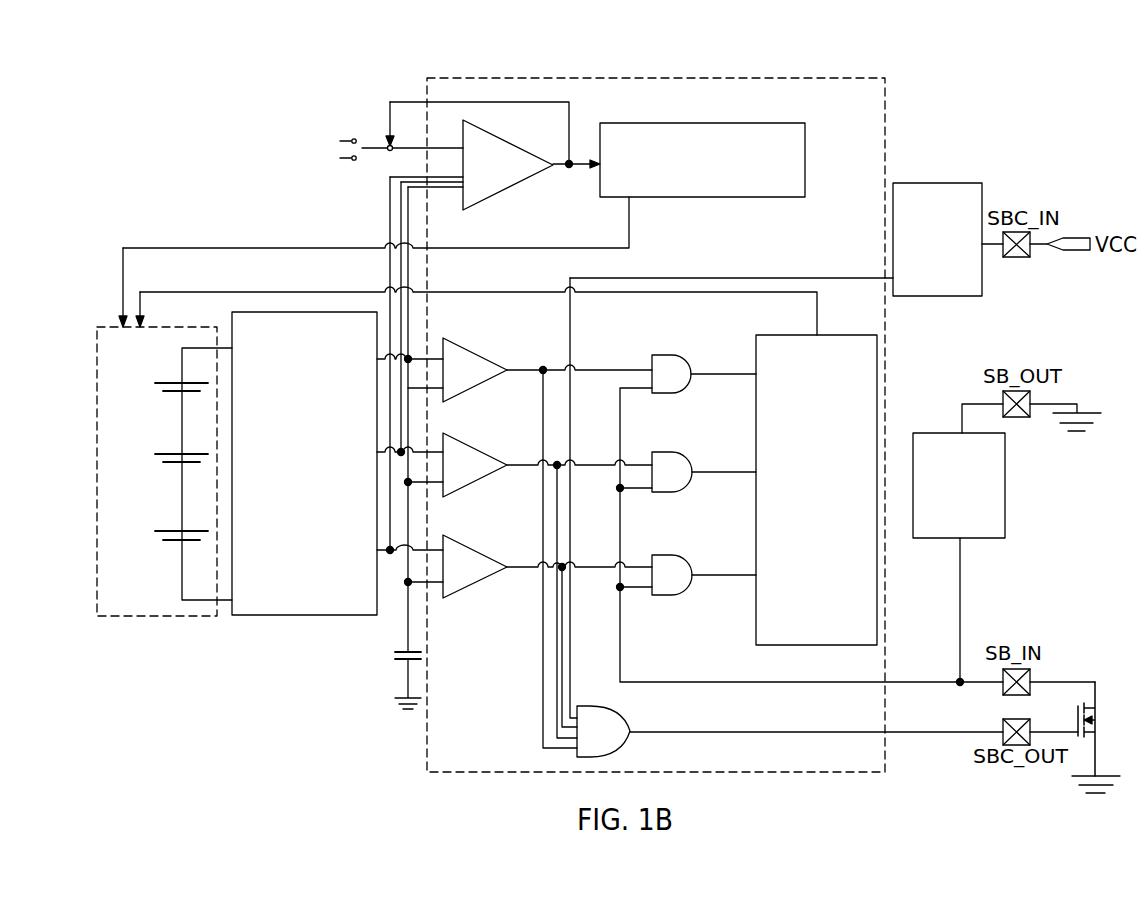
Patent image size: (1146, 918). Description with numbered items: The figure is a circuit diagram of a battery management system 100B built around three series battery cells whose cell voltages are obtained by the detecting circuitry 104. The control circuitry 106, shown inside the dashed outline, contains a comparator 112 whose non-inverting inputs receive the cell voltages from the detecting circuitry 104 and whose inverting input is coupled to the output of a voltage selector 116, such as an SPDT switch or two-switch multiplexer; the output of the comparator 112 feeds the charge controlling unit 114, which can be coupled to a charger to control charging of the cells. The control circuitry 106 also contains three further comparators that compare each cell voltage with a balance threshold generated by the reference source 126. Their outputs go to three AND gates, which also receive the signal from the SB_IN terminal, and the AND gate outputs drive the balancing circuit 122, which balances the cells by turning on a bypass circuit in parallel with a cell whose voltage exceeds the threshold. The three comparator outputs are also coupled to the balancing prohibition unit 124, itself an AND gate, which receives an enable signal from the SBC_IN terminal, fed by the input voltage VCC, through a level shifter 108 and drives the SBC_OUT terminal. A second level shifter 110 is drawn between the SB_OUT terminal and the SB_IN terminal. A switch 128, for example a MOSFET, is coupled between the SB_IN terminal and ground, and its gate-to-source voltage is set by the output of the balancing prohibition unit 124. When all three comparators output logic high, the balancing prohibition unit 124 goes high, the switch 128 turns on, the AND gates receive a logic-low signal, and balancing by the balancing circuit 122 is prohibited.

The battery management system 100B is at (213, 97).
The detecting circuitry 104 is at (318, 512).
The control circuitry 106 is at (658, 772).
The level shifter 108 is at (953, 281).
The level shifter 110 is at (978, 531).
The comparator 112 is at (483, 202).
The charge controlling unit 114 is at (793, 197).
The voltage selector 116 is at (378, 150).
The balancing circuit 122 is at (777, 645).
The balancing prohibition unit 124 is at (629, 741).
The reference source 126 is at (401, 651).
The switch 128 is at (1095, 692).